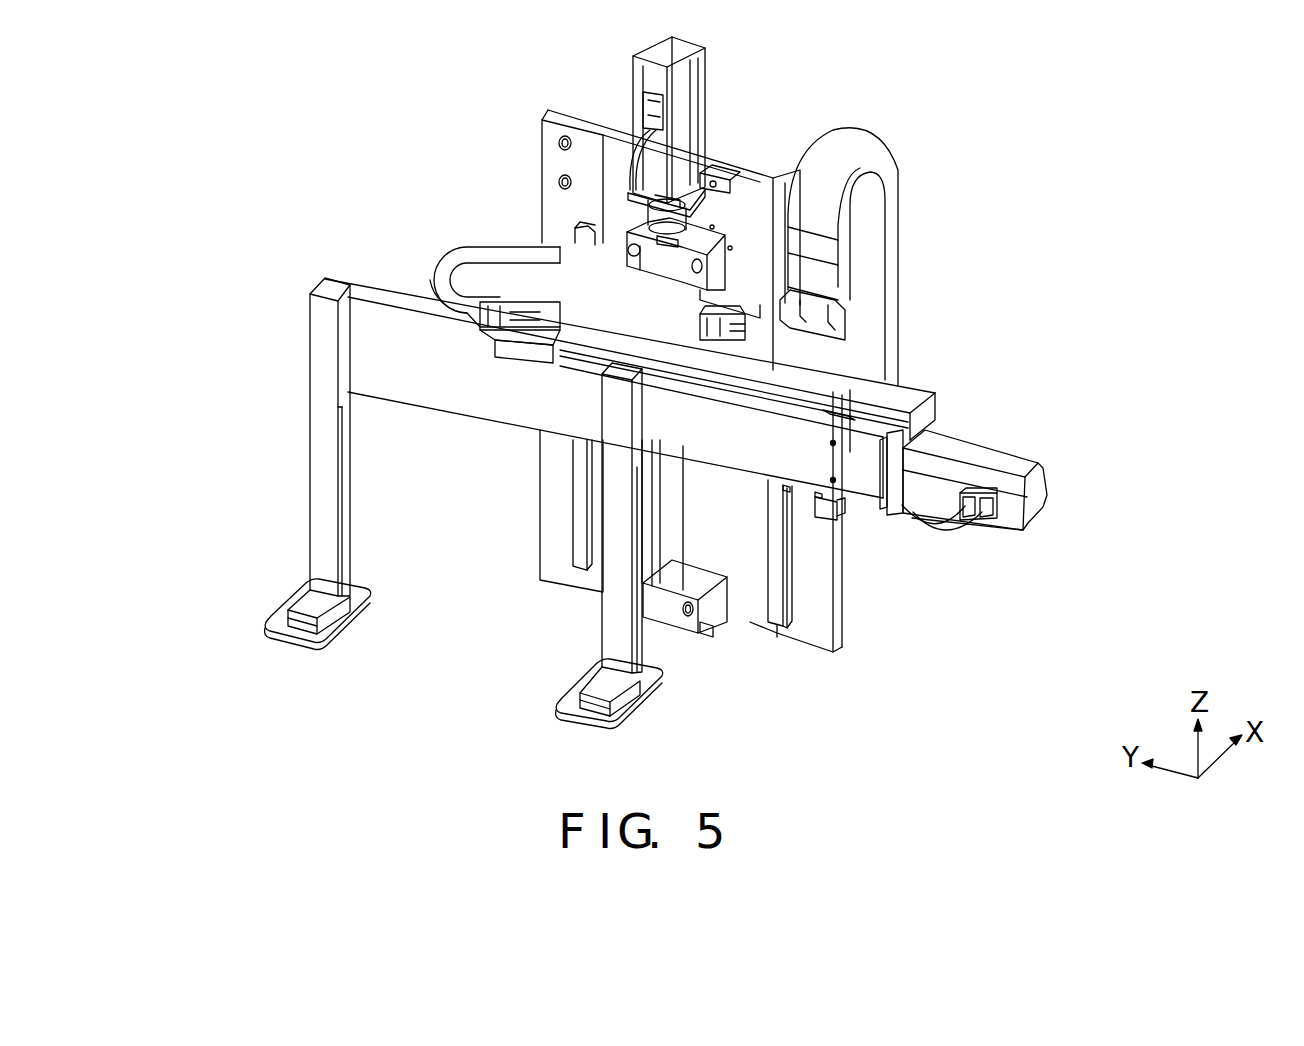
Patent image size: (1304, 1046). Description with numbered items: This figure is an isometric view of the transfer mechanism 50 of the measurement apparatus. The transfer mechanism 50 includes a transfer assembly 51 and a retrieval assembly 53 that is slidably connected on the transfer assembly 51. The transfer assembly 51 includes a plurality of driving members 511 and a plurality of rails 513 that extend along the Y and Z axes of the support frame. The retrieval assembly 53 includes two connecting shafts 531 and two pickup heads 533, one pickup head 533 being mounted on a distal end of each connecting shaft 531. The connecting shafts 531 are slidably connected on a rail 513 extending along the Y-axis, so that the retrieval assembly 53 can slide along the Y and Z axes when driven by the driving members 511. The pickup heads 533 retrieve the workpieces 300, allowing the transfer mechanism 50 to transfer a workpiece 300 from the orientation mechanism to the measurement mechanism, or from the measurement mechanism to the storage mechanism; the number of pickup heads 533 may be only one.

The transfer mechanism 50 is at (406, 188).
The transfer assembly 51 is at (1123, 355).
The driving members 511 is at (698, 158).
The rails 513 is at (747, 358).
The retrieval assembly 53 is at (182, 470).
The connecting shafts 531 is at (320, 493).
The pickup heads 533 is at (308, 605).
The workpiece 300 is at (282, 625).